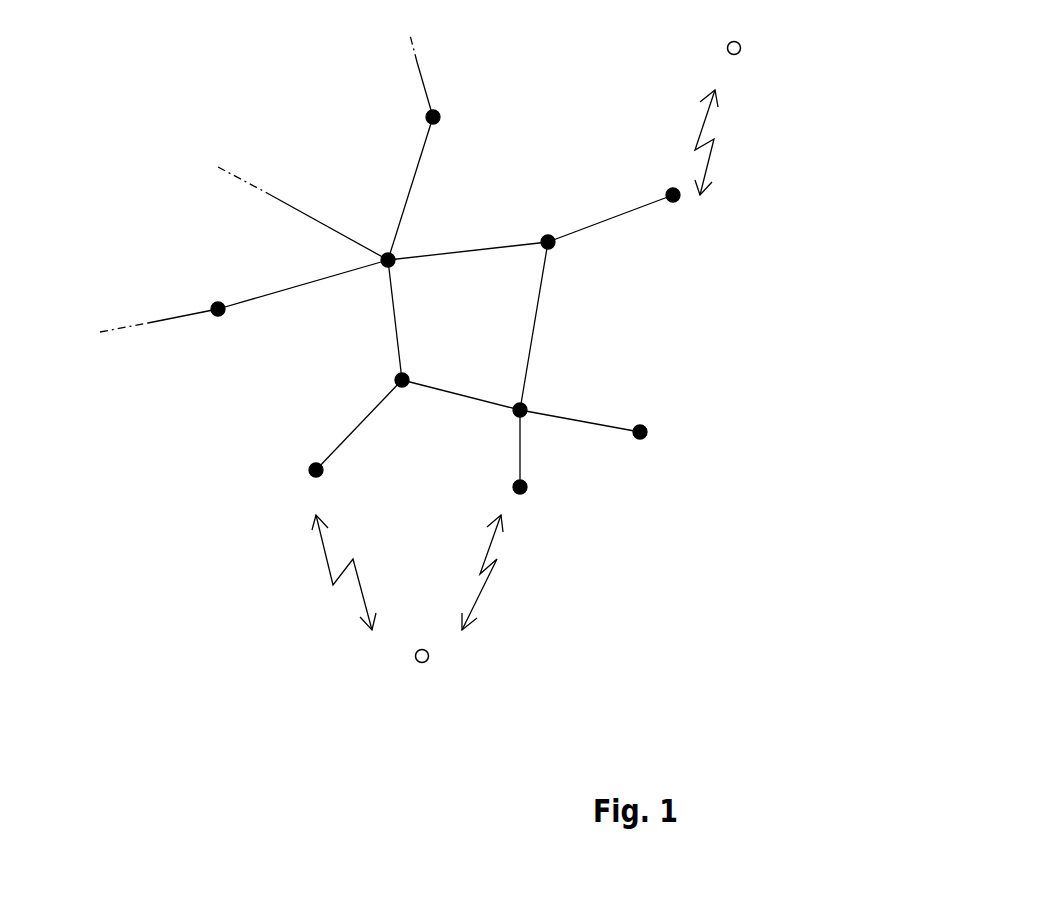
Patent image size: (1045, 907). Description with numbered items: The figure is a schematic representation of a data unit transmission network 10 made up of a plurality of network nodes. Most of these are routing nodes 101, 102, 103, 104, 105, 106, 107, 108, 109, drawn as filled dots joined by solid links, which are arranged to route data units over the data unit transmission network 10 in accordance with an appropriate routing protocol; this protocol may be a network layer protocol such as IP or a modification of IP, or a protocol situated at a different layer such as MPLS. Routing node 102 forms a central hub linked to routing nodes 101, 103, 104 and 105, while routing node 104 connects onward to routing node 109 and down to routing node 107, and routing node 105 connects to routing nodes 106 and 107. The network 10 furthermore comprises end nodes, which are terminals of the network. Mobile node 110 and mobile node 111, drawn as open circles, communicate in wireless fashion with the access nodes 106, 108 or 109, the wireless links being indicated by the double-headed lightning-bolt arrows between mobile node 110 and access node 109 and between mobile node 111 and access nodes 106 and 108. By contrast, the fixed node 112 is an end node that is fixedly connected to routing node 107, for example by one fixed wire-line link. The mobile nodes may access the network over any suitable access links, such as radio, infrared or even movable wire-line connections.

The data unit transmission network 10 is at (357, 261).
The routing node 101 is at (197, 291).
The routing node 102 is at (364, 284).
The routing node 103 is at (399, 134).
The routing node 104 is at (531, 227).
The routing node 105 is at (416, 369).
The access node 106 is at (338, 473).
The routing node 107 is at (541, 392).
The access node 108 is at (541, 483).
The access node 109 is at (668, 221).
The mobile node 110 is at (742, 112).
The mobile node 111 is at (407, 618).
The fixed node 112 is at (665, 425).